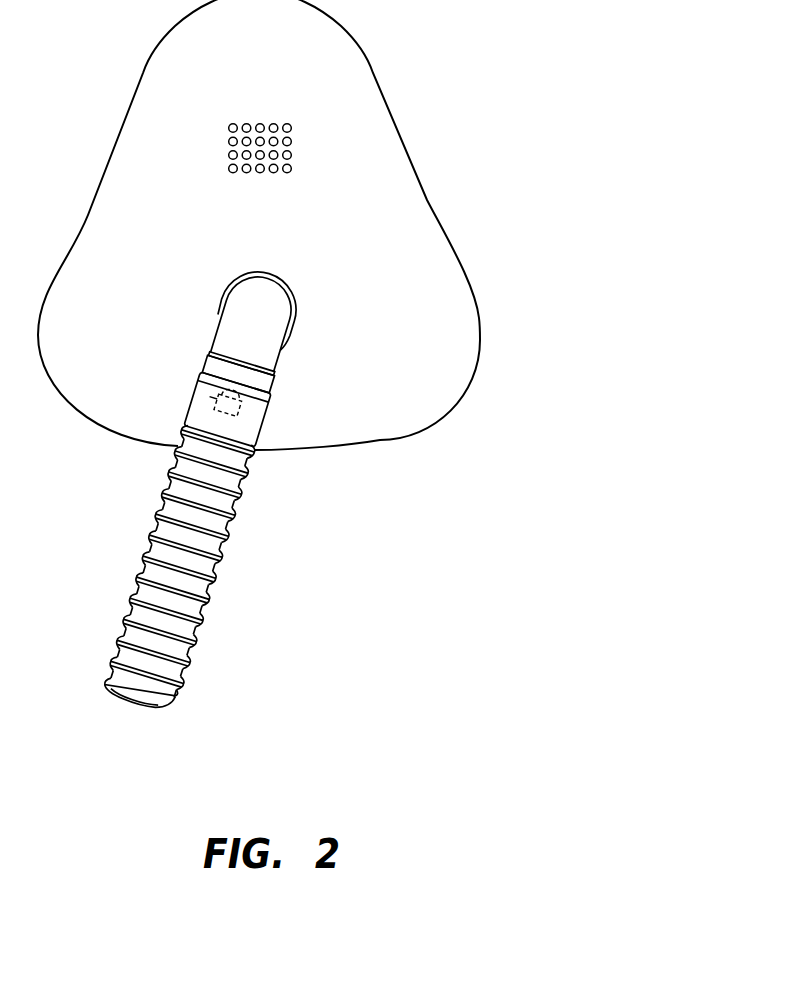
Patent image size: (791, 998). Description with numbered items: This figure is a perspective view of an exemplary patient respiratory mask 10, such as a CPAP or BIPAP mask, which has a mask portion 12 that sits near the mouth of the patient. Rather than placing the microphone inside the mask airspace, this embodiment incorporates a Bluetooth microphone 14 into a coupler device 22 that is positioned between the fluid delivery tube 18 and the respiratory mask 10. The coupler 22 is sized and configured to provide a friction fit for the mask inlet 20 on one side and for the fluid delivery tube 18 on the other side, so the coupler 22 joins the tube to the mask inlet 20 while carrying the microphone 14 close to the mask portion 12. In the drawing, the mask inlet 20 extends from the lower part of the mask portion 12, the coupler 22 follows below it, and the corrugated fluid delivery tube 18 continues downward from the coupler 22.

The respiratory mask 10 is at (430, 99).
The mask portion 12 is at (468, 318).
The Bluetooth microphone 14 is at (212, 400).
The fluid delivery tube 18 is at (178, 647).
The mask inlet 20 is at (238, 305).
The coupler device 22 is at (255, 430).